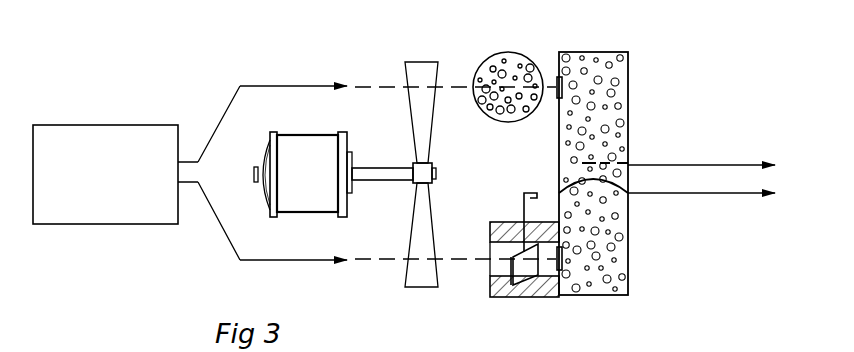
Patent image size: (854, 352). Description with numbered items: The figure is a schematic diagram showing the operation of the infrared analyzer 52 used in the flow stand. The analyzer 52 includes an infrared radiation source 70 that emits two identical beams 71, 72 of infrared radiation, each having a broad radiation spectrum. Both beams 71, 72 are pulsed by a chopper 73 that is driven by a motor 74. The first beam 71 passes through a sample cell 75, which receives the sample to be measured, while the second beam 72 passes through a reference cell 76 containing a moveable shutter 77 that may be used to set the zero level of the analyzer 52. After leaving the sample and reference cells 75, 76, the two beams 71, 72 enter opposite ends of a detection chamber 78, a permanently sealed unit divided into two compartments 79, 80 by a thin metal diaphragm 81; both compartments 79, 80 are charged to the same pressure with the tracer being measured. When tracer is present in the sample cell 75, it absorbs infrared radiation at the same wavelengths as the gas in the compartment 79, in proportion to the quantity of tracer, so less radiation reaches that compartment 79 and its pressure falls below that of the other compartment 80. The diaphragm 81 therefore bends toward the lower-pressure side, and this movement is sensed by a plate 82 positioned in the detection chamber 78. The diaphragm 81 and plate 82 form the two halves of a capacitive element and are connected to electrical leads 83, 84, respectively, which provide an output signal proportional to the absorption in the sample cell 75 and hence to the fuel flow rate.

The analyzer 52 is at (228, 78).
The infrared radiation source 70 is at (120, 130).
The beam 71 is at (292, 85).
The beam 72 is at (288, 262).
The chopper 73 is at (413, 107).
The motor 74 is at (297, 145).
The sample cell 75 is at (527, 60).
The reference cell 76 is at (528, 292).
The moveable shutter 77 is at (532, 192).
The detection chamber 78 is at (600, 53).
The compartment 79 is at (617, 107).
The compartment 80 is at (623, 263).
The diaphragm 81 is at (567, 183).
The plate 82 is at (593, 163).
The electrical lead 83 is at (725, 193).
The electrical lead 84 is at (728, 163).